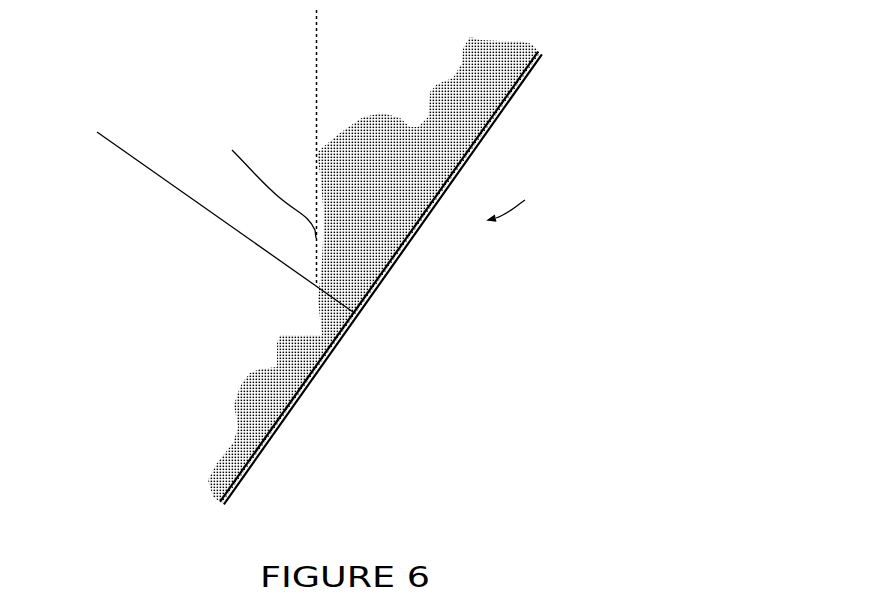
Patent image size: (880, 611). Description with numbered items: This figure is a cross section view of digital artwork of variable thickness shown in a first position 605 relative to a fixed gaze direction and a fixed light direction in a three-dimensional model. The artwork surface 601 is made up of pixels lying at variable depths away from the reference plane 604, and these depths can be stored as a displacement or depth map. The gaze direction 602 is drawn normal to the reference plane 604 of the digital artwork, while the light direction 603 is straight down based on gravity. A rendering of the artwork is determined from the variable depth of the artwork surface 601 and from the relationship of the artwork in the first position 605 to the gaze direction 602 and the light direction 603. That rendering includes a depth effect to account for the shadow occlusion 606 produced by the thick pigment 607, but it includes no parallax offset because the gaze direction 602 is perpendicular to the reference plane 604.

The artwork surface 601 is at (233, 405).
The gaze direction 602 is at (118, 148).
The light direction 603 is at (317, 33).
The reference plane 604 is at (307, 387).
The first position 605 is at (525, 204).
The shadow occlusion 606 is at (215, 171).
The thick pigment 607 is at (361, 222).